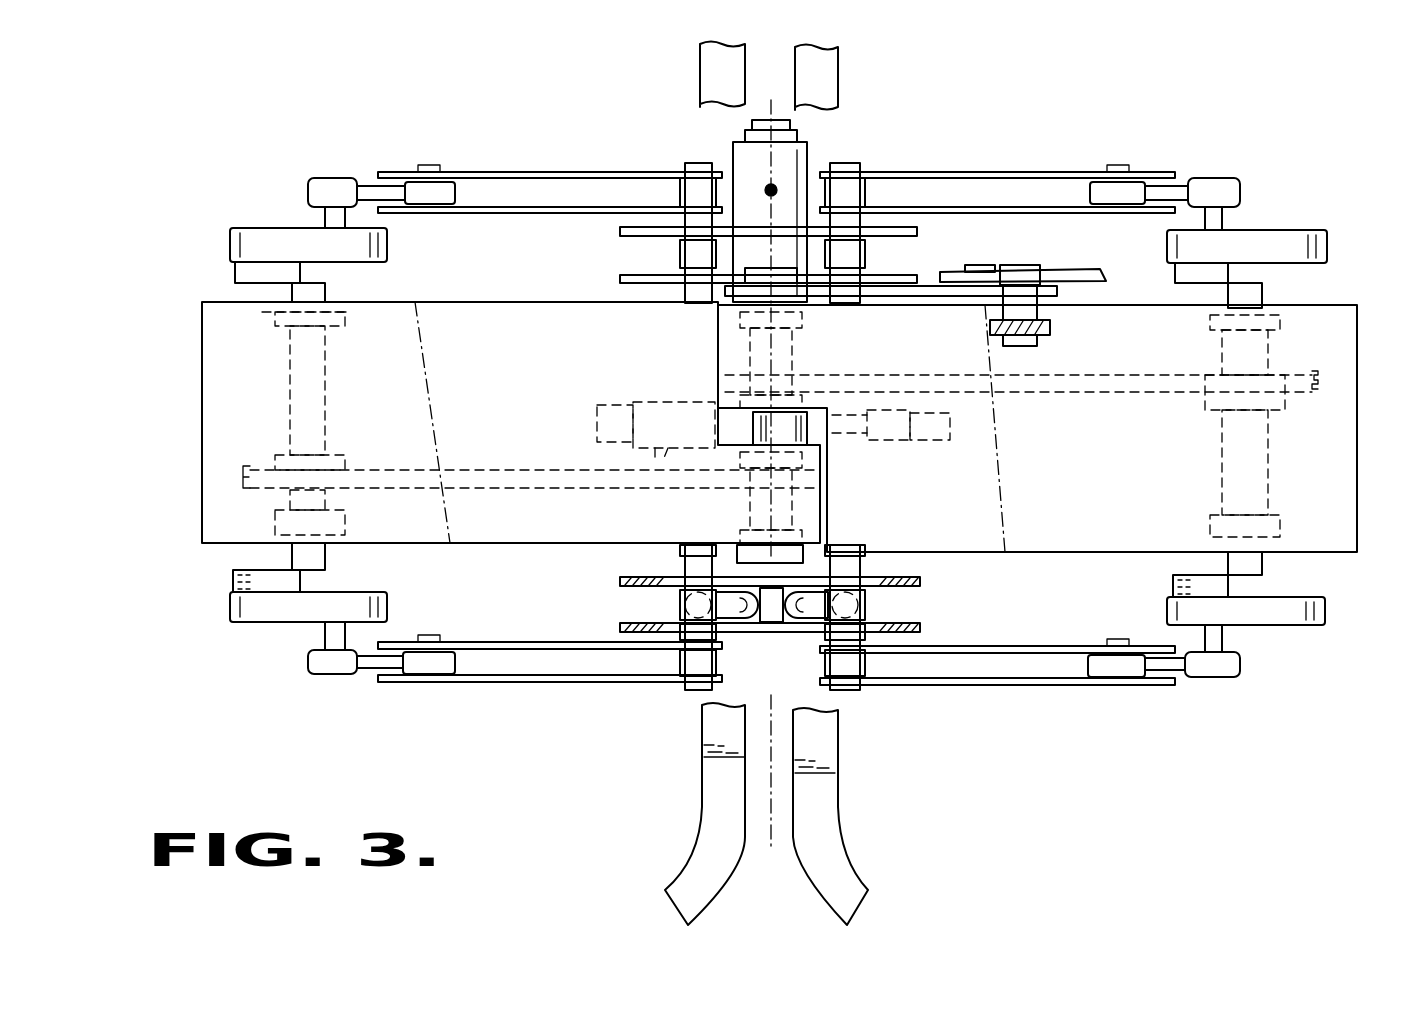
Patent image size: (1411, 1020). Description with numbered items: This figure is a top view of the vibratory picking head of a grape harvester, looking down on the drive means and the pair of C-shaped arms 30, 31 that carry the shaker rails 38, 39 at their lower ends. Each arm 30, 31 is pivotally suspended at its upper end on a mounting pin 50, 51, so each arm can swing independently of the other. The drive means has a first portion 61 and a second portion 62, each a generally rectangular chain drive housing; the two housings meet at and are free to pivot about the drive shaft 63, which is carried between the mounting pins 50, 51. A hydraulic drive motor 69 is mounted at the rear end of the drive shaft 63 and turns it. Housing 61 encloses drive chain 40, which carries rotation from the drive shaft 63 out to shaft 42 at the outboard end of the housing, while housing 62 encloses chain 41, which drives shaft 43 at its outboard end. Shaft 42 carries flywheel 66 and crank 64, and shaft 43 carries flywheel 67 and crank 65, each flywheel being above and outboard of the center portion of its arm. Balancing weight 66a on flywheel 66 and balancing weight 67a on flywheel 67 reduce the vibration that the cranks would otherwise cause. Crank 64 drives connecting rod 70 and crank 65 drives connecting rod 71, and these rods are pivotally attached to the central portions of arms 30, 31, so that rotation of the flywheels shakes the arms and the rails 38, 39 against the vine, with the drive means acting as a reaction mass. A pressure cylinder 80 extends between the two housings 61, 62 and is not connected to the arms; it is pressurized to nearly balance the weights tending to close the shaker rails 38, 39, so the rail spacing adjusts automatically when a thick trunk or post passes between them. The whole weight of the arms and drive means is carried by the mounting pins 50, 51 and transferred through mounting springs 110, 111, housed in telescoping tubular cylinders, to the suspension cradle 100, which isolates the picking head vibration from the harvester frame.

The C-shaped arm 30 is at (520, 682).
The C-shaped arm 31 is at (1008, 685).
The shaker rail 38 is at (690, 868).
The shaker rail 39 is at (850, 872).
The drive chain 40 is at (475, 468).
The chain 41 is at (1120, 360).
The shaft 42 is at (326, 393).
The shaft 43 is at (1268, 448).
The mounting pin 50 is at (680, 648).
The mounting pin 51 is at (862, 648).
The first portion of drive means 61 is at (500, 302).
The second portion of drive means 62 is at (1035, 552).
The drive shaft 63 is at (790, 338).
The crank 64 is at (318, 636).
The crank 65 is at (1225, 640).
The flywheel 66 is at (255, 615).
The balancing weight 66a is at (233, 580).
The flywheel 67 is at (1325, 615).
The balancing weight 67a is at (1173, 580).
The hydraulic drive motor 69 is at (810, 143).
The connecting rod 70 is at (368, 668).
The connecting rod 71 is at (1180, 672).
The pressure cylinder 80 is at (670, 400).
The suspension cradle 100 is at (920, 580).
The mounting spring 110 is at (738, 622).
The mounting spring 111 is at (805, 622).